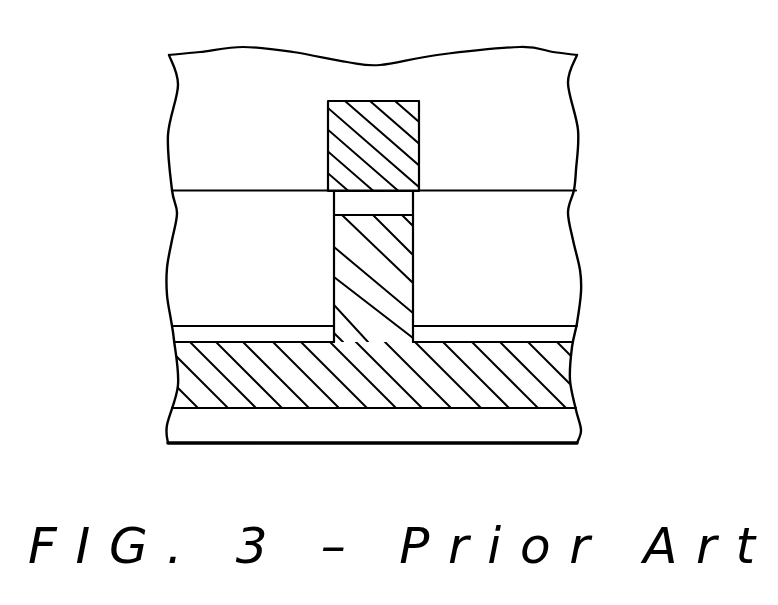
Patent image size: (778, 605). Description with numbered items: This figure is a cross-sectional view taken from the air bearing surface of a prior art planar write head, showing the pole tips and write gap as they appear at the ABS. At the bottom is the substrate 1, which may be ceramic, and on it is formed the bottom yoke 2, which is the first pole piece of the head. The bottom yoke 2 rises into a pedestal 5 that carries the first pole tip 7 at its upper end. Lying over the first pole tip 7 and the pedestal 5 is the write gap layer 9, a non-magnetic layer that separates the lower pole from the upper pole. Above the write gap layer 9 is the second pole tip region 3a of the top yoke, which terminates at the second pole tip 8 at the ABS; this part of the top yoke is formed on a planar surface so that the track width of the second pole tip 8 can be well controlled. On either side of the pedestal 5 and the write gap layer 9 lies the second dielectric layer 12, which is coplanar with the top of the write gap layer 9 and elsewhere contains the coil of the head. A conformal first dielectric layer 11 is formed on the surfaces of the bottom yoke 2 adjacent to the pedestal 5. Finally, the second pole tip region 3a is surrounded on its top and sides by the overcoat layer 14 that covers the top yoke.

The substrate 1 is at (552, 425).
The bottom yoke 2 is at (553, 373).
The second pole tip region 3a is at (327, 137).
The pedestal 5 is at (415, 297).
The first pole tip 7 is at (362, 305).
The second pole tip 8 is at (375, 127).
The write gap layer 9 is at (348, 203).
The first dielectric layer 11 is at (183, 332).
The second dielectric layer 12 is at (208, 289).
The overcoat layer 14 is at (543, 128).